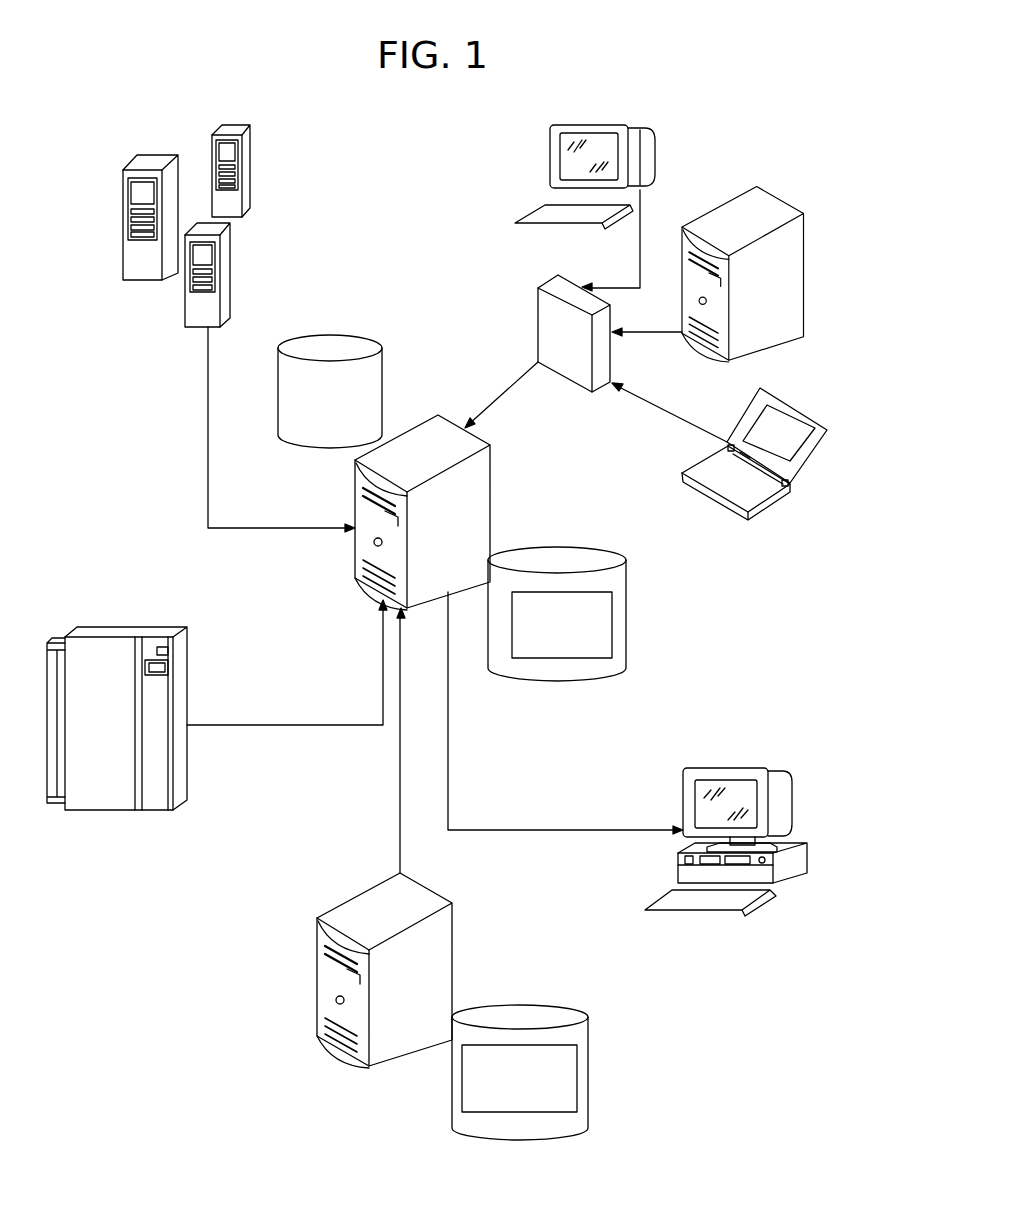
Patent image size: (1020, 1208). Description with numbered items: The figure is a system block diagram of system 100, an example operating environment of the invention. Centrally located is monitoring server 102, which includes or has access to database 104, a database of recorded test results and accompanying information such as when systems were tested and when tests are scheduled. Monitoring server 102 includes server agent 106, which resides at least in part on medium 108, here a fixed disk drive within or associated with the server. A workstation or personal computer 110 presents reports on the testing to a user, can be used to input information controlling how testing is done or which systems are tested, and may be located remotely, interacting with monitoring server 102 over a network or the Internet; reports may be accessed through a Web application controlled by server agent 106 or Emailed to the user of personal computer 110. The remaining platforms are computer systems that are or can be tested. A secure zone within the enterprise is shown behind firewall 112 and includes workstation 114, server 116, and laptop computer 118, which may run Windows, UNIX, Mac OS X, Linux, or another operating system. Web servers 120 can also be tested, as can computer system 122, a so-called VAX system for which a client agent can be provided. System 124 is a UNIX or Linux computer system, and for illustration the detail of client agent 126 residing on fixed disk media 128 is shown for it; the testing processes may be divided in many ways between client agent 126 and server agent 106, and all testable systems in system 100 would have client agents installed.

The system 100 is at (195, 965).
The monitoring server 102 is at (422, 422).
The database 104 is at (350, 333).
The server agent 106 is at (612, 627).
The medium 108 is at (587, 548).
The personal computer 110 is at (767, 767).
The firewall 112 is at (540, 283).
The workstation 114 is at (638, 127).
The server 116 is at (773, 198).
The laptop computer 118 is at (797, 403).
The Web servers 120 is at (232, 280).
The computer system 122 is at (105, 628).
The system 124 is at (345, 903).
The client agent 126 is at (577, 1078).
The fixed disk media 128 is at (573, 1010).